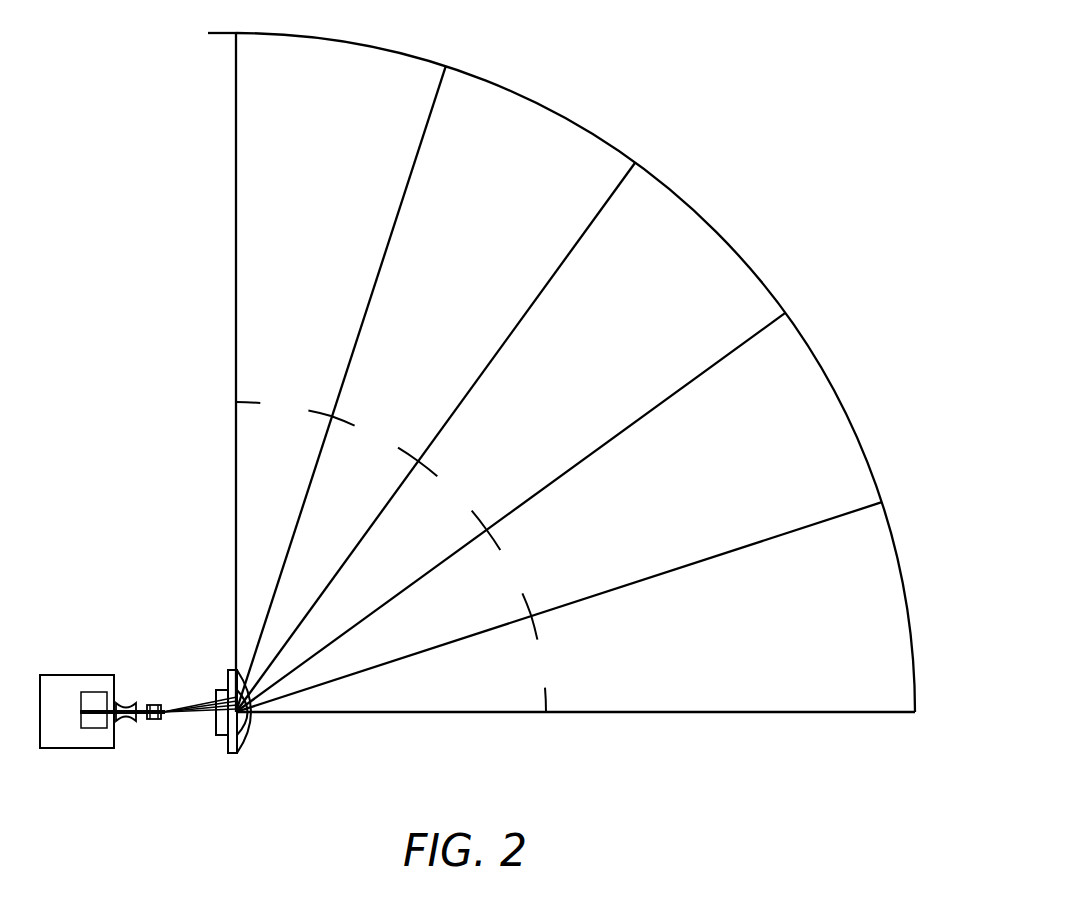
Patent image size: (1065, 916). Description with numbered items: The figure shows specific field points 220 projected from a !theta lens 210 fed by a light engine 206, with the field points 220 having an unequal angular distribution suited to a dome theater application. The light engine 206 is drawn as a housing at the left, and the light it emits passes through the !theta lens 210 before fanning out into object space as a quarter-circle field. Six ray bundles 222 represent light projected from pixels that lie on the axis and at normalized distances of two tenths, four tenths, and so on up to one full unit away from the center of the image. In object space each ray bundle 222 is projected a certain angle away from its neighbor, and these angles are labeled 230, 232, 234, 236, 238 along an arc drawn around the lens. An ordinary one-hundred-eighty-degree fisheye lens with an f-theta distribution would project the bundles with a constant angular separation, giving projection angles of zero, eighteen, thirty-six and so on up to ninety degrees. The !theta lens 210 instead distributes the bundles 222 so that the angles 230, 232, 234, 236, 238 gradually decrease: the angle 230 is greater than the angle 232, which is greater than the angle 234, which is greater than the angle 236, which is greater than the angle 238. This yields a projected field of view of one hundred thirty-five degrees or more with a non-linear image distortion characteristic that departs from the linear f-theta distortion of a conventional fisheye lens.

The light engine 206 is at (80, 672).
The !theta lens 210 is at (170, 738).
The field points 220 is at (782, 88).
The ray bundles 222 is at (410, 168).
The angle 230 is at (542, 663).
The angle 232 is at (509, 572).
The angle 234 is at (452, 495).
The angle 236 is at (374, 438).
The angle 238 is at (283, 406).